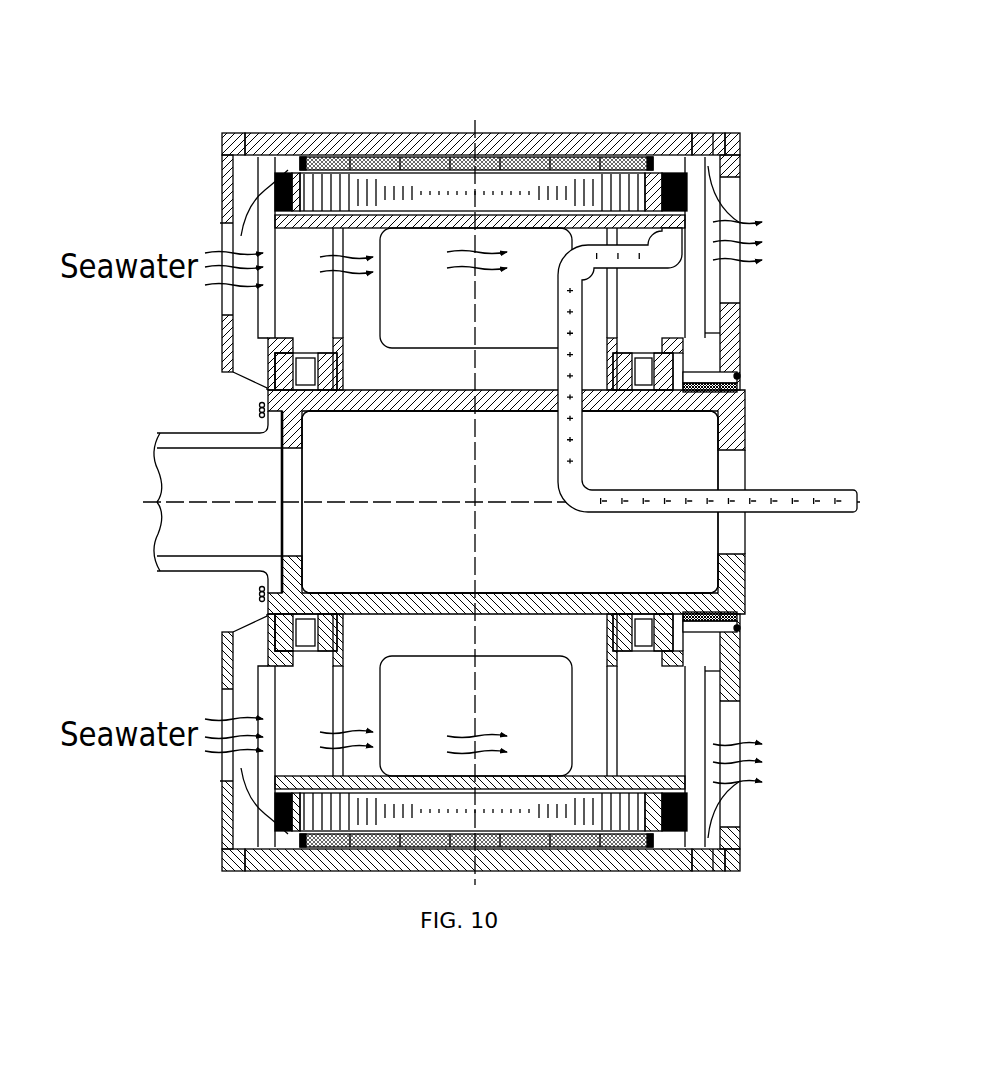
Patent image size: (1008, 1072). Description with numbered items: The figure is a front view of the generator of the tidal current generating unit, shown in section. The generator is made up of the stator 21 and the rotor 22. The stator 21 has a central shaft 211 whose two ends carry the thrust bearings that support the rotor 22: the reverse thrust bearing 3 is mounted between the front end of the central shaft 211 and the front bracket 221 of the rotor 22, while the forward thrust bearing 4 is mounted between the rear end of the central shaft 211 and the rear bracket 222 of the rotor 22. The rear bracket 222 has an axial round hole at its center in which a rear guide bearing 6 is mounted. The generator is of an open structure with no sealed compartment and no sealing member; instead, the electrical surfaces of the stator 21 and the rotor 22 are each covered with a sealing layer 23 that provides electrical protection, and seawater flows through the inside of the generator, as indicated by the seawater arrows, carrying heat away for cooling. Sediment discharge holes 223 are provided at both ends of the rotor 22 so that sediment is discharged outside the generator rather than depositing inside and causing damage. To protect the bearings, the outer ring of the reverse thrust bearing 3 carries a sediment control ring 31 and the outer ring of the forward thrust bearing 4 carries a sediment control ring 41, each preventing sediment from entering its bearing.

The stator 21 is at (407, 190).
The central shaft of the stator 211 is at (367, 388).
The rotor 22 is at (482, 140).
The front bracket 221 is at (275, 280).
The rear bracket 222 is at (690, 157).
The sediment discharge holes 223 is at (245, 145).
The sealing layer 23 is at (650, 157).
The reverse thrust bearing 3 is at (303, 355).
The sediment control ring 31 is at (306, 368).
The forward thrust bearing 4 is at (643, 377).
The sediment control ring 41 is at (640, 370).
The rear guide bearing 6 is at (738, 373).